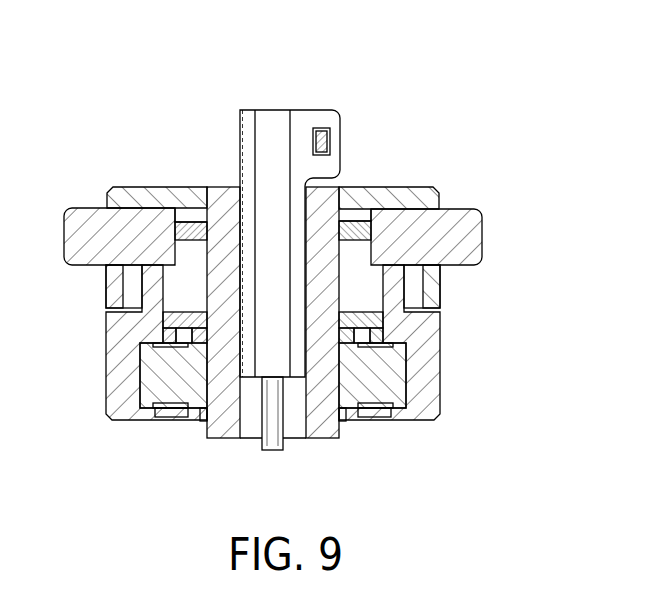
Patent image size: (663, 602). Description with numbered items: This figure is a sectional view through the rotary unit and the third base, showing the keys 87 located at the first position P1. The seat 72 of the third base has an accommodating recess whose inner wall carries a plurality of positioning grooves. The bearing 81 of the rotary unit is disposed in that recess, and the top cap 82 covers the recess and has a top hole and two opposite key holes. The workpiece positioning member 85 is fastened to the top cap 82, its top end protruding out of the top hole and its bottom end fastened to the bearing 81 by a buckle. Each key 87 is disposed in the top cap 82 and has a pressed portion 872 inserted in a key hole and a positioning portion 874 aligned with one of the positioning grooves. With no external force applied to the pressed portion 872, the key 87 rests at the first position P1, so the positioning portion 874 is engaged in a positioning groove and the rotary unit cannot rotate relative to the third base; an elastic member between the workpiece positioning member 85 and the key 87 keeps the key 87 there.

The workpiece positioning member 85 is at (322, 96).
The top cap 82 is at (403, 193).
The key 87 is at (78, 191).
The pressed portion 872 is at (472, 235).
The positioning portion 874 is at (410, 325).
The seat 72 is at (432, 405).
The bearing 81 is at (373, 385).
The first position P1 is at (473, 189).